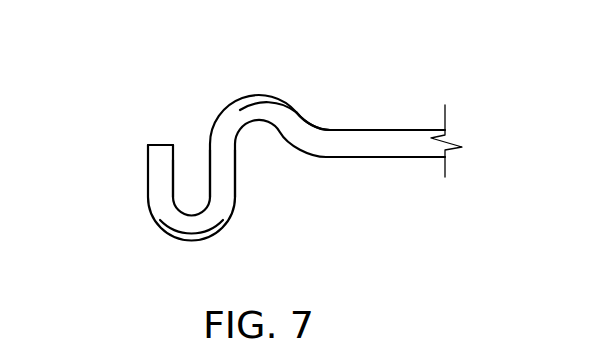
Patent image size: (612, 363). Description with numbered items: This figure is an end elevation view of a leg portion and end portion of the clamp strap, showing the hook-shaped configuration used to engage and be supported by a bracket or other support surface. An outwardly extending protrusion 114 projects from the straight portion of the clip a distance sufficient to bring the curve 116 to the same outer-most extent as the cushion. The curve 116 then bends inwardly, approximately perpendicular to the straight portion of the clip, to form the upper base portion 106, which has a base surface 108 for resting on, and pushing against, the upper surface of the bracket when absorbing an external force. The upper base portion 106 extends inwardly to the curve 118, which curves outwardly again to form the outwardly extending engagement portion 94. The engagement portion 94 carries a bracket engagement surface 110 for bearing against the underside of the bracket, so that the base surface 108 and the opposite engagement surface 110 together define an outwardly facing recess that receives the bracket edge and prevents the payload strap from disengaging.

The first outwardly extending engagement portion 94 is at (160, 143).
The upper base portion 106 is at (237, 176).
The base surface 108 is at (209, 175).
The bracket engagement surface 110 is at (174, 176).
The outwardly extending protrusion 114 is at (308, 113).
The curve 116 is at (285, 98).
The curve 118 is at (192, 242).